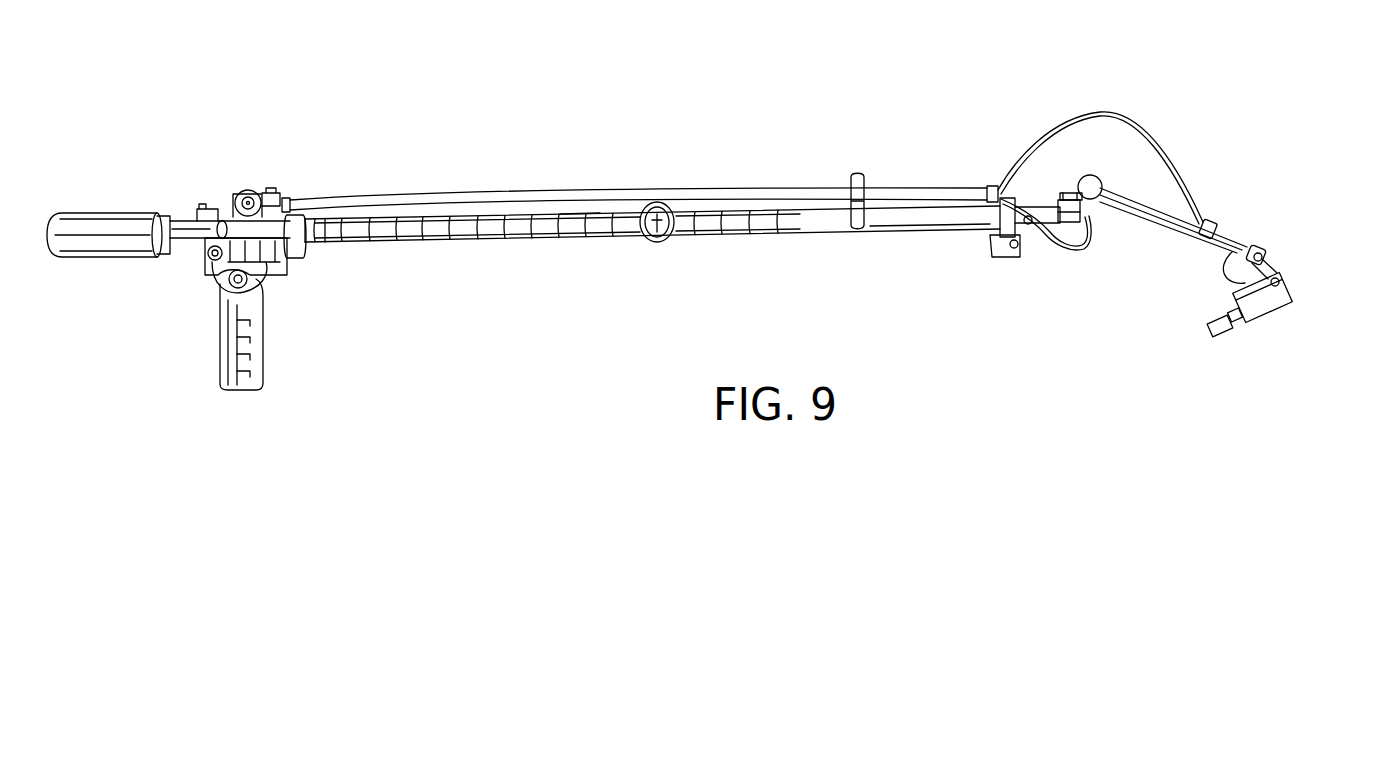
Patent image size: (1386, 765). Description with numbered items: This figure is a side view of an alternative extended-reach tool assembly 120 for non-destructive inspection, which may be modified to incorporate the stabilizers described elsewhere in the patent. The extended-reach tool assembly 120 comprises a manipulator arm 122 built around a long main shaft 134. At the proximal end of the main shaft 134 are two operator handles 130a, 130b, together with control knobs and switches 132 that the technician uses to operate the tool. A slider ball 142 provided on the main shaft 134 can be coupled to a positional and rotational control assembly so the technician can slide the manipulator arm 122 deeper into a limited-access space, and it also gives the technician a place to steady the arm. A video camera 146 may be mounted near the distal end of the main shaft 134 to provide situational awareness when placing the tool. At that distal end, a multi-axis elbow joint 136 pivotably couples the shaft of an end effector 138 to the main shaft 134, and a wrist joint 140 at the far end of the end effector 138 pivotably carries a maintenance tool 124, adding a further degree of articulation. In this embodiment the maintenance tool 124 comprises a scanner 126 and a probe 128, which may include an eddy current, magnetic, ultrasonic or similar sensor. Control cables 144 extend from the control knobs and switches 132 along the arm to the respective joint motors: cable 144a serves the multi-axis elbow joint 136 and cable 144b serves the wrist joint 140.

The extended-reach tool assembly 120 is at (924, 106).
The manipulator arm 122 is at (799, 241).
The maintenance tool 124 is at (1284, 314).
The scanner 126 is at (1261, 308).
The probe 128 is at (1216, 335).
The operator handle 130a is at (134, 246).
The operator handle 130b is at (226, 331).
The control knobs and switches 132 is at (203, 208).
The main shaft 134 is at (580, 234).
The multi-axis elbow joint 136 is at (1080, 178).
The end effector 138 is at (1170, 232).
The wrist joint 140 is at (1262, 253).
The slider ball 142 is at (657, 244).
The control cables 144 is at (748, 191).
The cable 144a is at (1073, 252).
The cable 144b is at (1136, 121).
The video camera 146 is at (1005, 254).